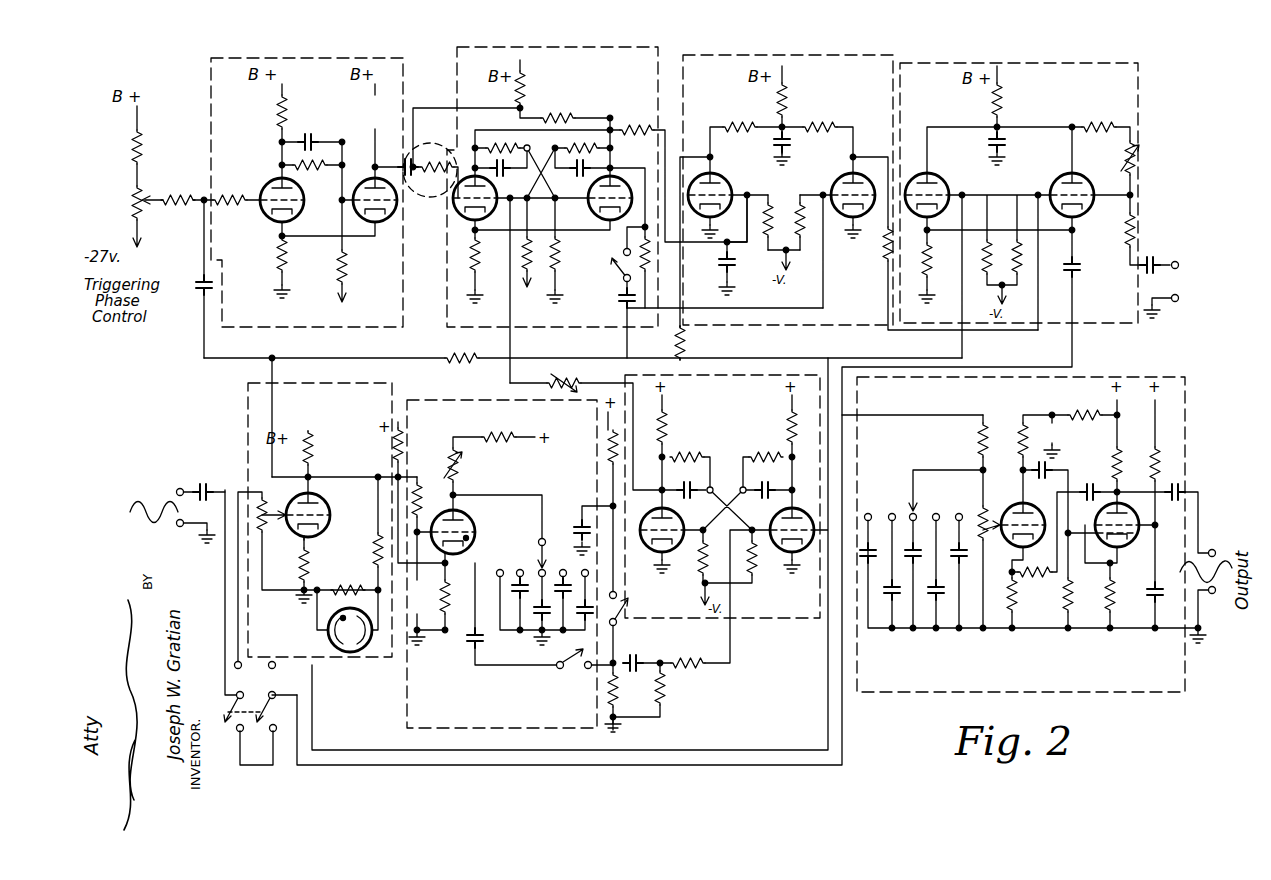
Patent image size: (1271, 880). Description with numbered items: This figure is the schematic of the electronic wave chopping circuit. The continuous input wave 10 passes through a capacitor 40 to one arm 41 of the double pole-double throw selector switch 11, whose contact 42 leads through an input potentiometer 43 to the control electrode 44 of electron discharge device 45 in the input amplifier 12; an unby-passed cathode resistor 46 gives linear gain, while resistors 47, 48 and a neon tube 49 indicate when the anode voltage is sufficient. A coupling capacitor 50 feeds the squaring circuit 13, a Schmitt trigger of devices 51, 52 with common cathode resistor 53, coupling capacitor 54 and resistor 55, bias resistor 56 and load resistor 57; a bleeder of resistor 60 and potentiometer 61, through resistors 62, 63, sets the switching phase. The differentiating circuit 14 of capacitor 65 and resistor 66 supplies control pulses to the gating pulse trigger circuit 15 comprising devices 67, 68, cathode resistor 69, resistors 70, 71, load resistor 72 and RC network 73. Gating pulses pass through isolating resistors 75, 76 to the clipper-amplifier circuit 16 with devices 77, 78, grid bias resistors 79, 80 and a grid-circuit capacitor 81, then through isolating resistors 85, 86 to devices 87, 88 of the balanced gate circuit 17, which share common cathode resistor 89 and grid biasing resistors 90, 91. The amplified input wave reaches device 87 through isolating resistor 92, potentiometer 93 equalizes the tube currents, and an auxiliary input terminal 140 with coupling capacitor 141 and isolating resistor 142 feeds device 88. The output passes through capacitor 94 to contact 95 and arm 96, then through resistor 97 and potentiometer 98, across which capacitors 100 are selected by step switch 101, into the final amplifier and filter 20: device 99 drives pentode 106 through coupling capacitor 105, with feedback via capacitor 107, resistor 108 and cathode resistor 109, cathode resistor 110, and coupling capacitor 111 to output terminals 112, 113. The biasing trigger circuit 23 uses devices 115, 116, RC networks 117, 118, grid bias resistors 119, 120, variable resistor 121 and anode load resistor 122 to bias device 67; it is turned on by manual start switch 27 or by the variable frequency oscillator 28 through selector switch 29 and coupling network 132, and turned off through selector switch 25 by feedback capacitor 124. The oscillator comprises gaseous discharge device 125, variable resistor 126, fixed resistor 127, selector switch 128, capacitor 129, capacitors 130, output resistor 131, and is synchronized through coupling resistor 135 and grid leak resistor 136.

The continuous input wave 10 is at (150, 500).
The double pole-double throw selector switch 11 is at (267, 734).
The input amplifier 12 is at (372, 670).
The squaring circuit 13 is at (211, 58).
The differentiating circuit 14 is at (432, 143).
The gating pulse trigger circuit 15 is at (457, 54).
The clipper-amplifier circuit 16 is at (880, 58).
The balanced gate circuit 17 is at (1125, 66).
The final amplifier and filter 20 is at (1186, 686).
The biasing trigger circuit 23 is at (798, 620).
The selector switch 25 is at (618, 268).
The manual start switch 27 is at (626, 616).
The variable frequency oscillator 28 is at (407, 720).
The selector switch 29 is at (565, 666).
The capacitor 40 is at (204, 482).
The switch arm 41 is at (243, 698).
The contact 42 is at (236, 661).
The input potentiometer 43 is at (270, 525).
The control electrode 44 is at (330, 506).
The electron discharge device 45 is at (322, 524).
The unby-passed cathode resistor 46 is at (309, 560).
The resistor 47 is at (370, 548).
The resistor 48 is at (348, 585).
The neon tube 49 is at (330, 640).
The coupling capacitor 50 is at (200, 278).
The electron discharge device 51 is at (300, 196).
The electron discharge device 52 is at (372, 225).
The common cathode resistor 53 is at (288, 258).
The capacitor 54 is at (312, 135).
The resistor 55 is at (320, 162).
The resistor 56 is at (348, 268).
The load resistor 57 is at (277, 108).
The resistor 60 is at (143, 145).
The potentiometer 61 is at (131, 210).
The resistor 62 is at (183, 186).
The resistor 63 is at (228, 193).
The capacitor 65 is at (408, 155).
The resistor 66 is at (440, 172).
The electron discharge device 67 is at (495, 192).
The electron discharge device 68 is at (590, 208).
The common cathode resistor 69 is at (484, 254).
The resistor 70 is at (561, 252).
The resistor 71 is at (518, 268).
The load resistor 72 is at (558, 113).
The RC network 73 is at (590, 165).
The isolating resistor 75 is at (630, 126).
The isolating resistor 76 is at (651, 260).
The electron discharge device 77 is at (732, 178).
The electron discharge device 78 is at (840, 178).
The grid bias resistor 79 is at (764, 236).
The grid bias resistor 80 is at (803, 236).
The capacitor 81 is at (718, 260).
The isolating resistor 85 is at (882, 258).
The isolating resistor 86 is at (688, 340).
The electron discharge device 87 is at (942, 176).
The electron discharge device 88 is at (1058, 176).
The common cathode resistor 89 is at (933, 266).
The grid biasing resistor 90 is at (983, 272).
The grid biasing resistor 91 is at (1021, 272).
The isolating resistor 92 is at (470, 354).
The potentiometer 93 is at (1141, 160).
The capacitor 94 is at (1080, 268).
The contact 95 is at (274, 661).
The switch arm 96 is at (274, 693).
The resistor 97 is at (975, 442).
The potentiometer 98 is at (988, 512).
The electron discharge device 99 is at (1048, 494).
The capacitors 100 is at (876, 545).
The step switch 101 is at (931, 499).
The coupling capacitor 105 is at (1050, 462).
The pentode type electron discharge device 106 is at (1140, 504).
The capacitor 107 is at (1100, 470).
The resistor 108 is at (1048, 562).
The unbypassed cathode resistor 109 is at (1018, 594).
The unbypassed cathode resistor 110 is at (1114, 588).
The coupling capacitor 111 is at (1180, 486).
The output terminal 112 is at (1214, 548).
The output terminal 113 is at (1212, 595).
The electron discharge device 115 is at (694, 498).
The electron discharge device 116 is at (770, 512).
The RC network 117 is at (686, 465).
The RC network 118 is at (766, 465).
The grid bias resistor 119 is at (700, 572).
The grid bias resistor 120 is at (756, 574).
The variable resistor 121 is at (580, 378).
The anode load resistor 122 is at (668, 420).
The feedback capacitor 124 is at (617, 300).
The gaseous discharge device 125 is at (475, 516).
The variable resistor 126 is at (462, 480).
The fixed resistor 127 is at (506, 441).
The selector switch 128 is at (540, 552).
The capacitor 129 is at (535, 612).
The capacitors 130 is at (555, 603).
The output resistor 131 is at (450, 595).
The coupling network 132 is at (404, 440).
The coupling resistor 135 is at (420, 488).
The grid leak resistor 136 is at (466, 636).
The input terminal 140 is at (1180, 262).
The coupling capacitor 141 is at (1150, 258).
The isolating resistor 142 is at (1136, 214).